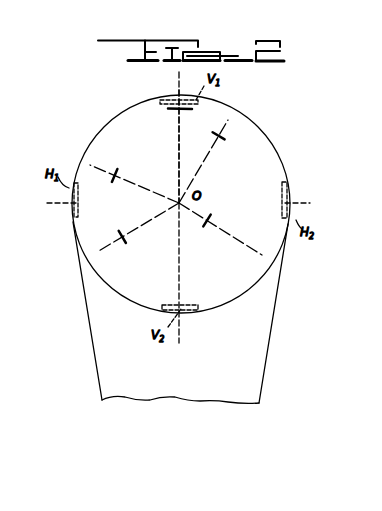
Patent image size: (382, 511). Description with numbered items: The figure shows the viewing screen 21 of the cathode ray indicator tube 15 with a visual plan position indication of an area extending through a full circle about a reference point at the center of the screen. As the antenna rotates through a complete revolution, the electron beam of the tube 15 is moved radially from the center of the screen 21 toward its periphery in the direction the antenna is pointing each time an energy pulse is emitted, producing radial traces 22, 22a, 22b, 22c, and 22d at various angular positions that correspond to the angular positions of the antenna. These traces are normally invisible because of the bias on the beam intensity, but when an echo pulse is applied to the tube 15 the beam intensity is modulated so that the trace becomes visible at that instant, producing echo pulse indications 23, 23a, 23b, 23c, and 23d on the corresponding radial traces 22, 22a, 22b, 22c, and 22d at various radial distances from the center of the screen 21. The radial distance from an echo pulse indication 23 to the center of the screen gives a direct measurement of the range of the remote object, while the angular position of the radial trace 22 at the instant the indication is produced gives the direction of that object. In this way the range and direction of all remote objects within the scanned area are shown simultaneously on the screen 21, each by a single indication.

The cathode ray indicator tube 15 is at (94, 370).
The screen 21 is at (106, 120).
The radial trace 22 is at (177, 126).
The radial trace 22a is at (205, 160).
The radial trace 22b is at (230, 237).
The radial trace 22c is at (108, 249).
The radial trace 22d is at (140, 186).
The echo pulse indication 23 is at (185, 112).
The echo pulse indication 23a is at (225, 137).
The echo pulse indication 23b is at (208, 218).
The echo pulse indication 23c is at (128, 240).
The echo pulse indication 23d is at (117, 168).